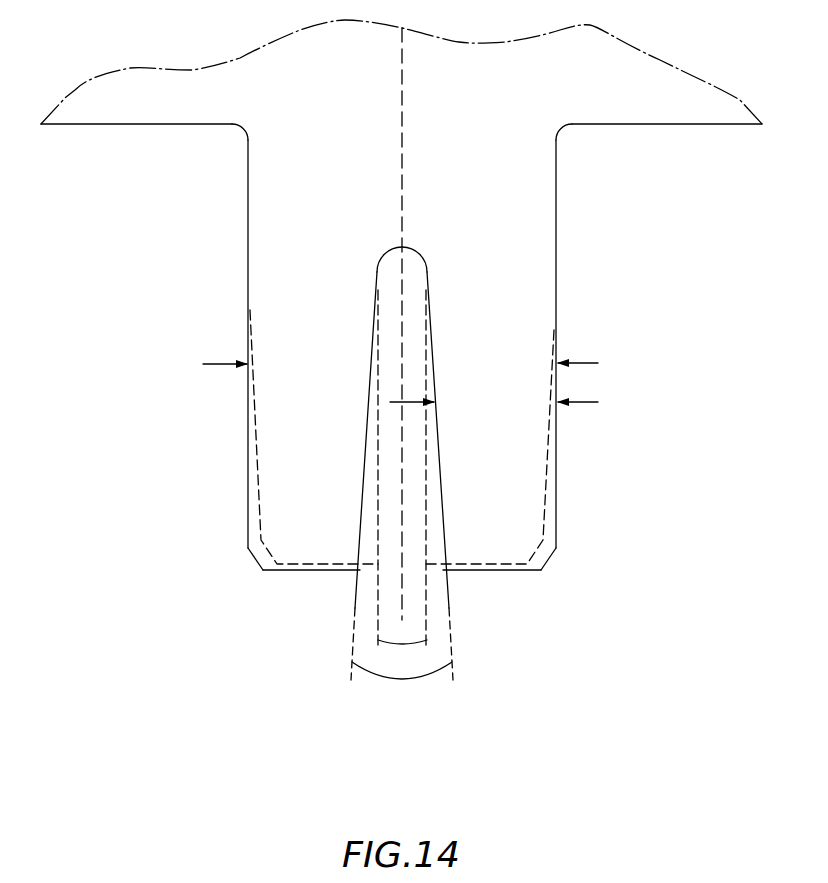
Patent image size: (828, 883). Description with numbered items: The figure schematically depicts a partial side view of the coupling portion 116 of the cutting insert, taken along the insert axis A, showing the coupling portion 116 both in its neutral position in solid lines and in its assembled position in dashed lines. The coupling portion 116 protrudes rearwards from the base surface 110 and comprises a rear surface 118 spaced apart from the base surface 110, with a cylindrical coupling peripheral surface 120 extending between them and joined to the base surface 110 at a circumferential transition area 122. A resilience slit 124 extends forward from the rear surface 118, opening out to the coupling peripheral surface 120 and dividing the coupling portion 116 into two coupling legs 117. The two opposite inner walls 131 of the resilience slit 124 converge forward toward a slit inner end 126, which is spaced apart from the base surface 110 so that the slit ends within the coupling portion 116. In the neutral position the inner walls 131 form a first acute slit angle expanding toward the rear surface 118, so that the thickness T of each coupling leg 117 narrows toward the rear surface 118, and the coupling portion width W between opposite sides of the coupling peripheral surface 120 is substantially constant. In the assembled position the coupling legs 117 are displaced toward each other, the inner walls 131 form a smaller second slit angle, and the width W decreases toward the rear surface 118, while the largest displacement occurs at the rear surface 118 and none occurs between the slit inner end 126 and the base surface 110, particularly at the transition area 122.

The base surface 110 is at (617, 126).
The coupling portion 116 is at (136, 380).
The coupling legs 117 is at (282, 424).
The rear surface 118 is at (283, 572).
The coupling peripheral surface 120 is at (247, 196).
The transition area 122 is at (246, 138).
The resilience slit 124 is at (418, 572).
The slit inner end 126 is at (404, 249).
The inner walls 131 is at (362, 538).
The coupling portion width W is at (414, 364).
The thickness T is at (588, 402).
The insert axis A is at (400, 608).